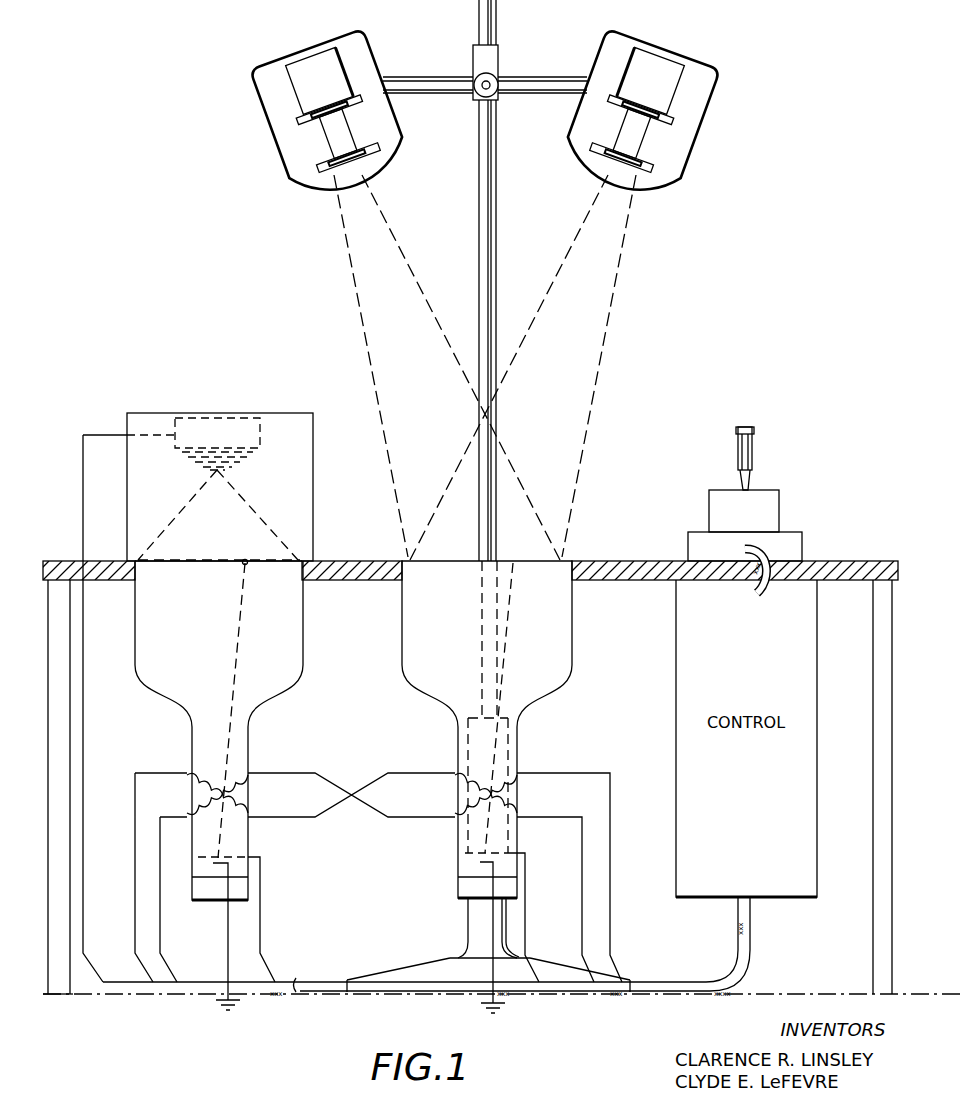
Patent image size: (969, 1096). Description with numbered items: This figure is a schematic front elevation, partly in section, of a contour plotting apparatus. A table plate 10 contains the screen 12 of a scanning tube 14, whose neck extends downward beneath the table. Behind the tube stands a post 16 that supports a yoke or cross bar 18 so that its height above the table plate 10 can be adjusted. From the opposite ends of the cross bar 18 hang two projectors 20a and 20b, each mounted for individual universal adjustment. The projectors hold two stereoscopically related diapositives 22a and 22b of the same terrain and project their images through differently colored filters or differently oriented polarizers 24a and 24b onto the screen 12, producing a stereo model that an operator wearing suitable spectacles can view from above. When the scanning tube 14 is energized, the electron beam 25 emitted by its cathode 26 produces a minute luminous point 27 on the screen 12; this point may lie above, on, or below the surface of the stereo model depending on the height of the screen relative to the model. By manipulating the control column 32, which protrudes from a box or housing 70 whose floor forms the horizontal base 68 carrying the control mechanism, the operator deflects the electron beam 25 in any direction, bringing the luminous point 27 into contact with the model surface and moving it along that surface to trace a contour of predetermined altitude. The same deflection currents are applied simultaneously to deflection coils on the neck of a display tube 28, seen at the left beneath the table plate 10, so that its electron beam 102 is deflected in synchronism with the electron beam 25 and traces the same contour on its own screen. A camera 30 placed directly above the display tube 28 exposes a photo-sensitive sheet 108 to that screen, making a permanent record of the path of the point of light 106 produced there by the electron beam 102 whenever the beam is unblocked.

The table plate 10 is at (347, 563).
The screen 12 is at (542, 556).
The scanning tube 14 is at (432, 718).
The post 16 is at (497, 230).
The cross bar 18 is at (541, 77).
The projector 20a is at (300, 92).
The projector 20b is at (668, 100).
The diapositive 22a is at (297, 123).
The diapositive 22b is at (672, 118).
The filter 24a is at (313, 182).
The filter 24b is at (650, 175).
The electron beam 25 is at (506, 640).
The cathode 26 is at (500, 862).
The luminous point 27 is at (512, 558).
The display tube 28 is at (165, 720).
The camera 30 is at (228, 415).
The control column 32 is at (753, 450).
The base 68 is at (690, 545).
The housing 70 is at (773, 512).
The electron beam 102 is at (238, 648).
The point of light 106 is at (242, 566).
The photo-sensitive sheet 108 is at (152, 578).